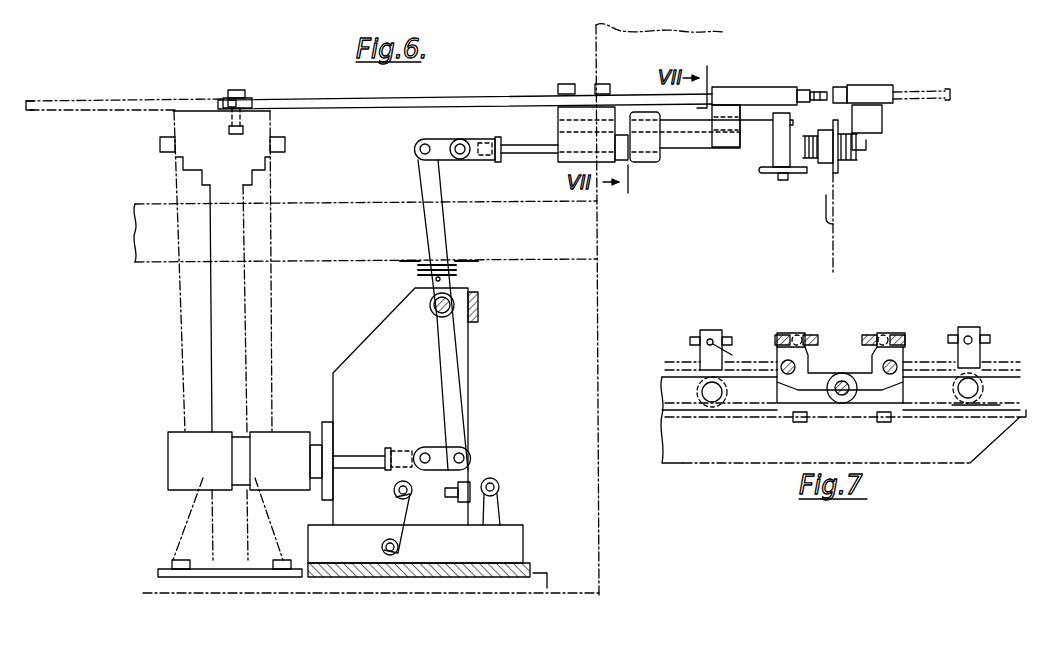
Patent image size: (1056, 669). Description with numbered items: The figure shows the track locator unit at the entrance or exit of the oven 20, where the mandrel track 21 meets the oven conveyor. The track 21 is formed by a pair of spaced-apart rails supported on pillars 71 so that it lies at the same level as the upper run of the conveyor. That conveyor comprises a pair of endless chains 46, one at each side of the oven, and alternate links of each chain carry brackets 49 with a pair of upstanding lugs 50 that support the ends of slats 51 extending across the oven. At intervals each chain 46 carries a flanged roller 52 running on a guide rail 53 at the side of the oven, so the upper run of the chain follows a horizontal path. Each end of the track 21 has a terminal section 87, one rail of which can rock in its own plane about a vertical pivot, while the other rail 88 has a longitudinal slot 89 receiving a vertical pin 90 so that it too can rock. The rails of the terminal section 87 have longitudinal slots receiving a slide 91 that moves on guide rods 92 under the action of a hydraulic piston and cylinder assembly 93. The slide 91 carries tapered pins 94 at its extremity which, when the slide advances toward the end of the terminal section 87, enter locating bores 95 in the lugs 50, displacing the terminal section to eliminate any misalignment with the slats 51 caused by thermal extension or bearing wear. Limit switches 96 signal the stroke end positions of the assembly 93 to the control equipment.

In FIG. 6, the oven 20 is at (597, 304).
In FIG. 6, the track 21 is at (128, 98).
In FIG. 6, the endless chains 46 is at (840, 160).
In FIG. 7, the endless chains 46 is at (987, 381).
In FIG. 6, the brackets 49 is at (863, 136).
In FIG. 7, the brackets 49 is at (741, 369).
In FIG. 6, the upstanding lugs 50 is at (893, 88).
In FIG. 7, the upstanding lugs 50 is at (711, 377).
In FIG. 6, the slats 51 is at (910, 92).
In FIG. 7, the slats 51 is at (720, 329).
In FIG. 6, the flanged roller 52 is at (843, 95).
In FIG. 7, the flanged roller 52 is at (982, 381).
In FIG. 6, the guide rail 53 is at (822, 129).
In FIG. 7, the guide rail 53 is at (940, 415).
In FIG. 6, the pillars 71 is at (209, 345).
In FIG. 6, the terminal section 87 is at (300, 97).
In FIG. 6, the rail 88 is at (437, 93).
In FIG. 7, the rail 88 is at (887, 333).
In FIG. 6, the longitudinal slot 89 is at (251, 99).
In FIG. 6, the vertical pin 90 is at (237, 92).
In FIG. 6, the slide 91 is at (760, 88).
In FIG. 7, the slide 91 is at (896, 366).
In FIG. 6, the guide rods 92 is at (748, 120).
In FIG. 7, the guide rods 92 is at (891, 373).
In FIG. 6, the hydraulic piston and cylinder assembly 93 is at (279, 452).
In FIG. 6, the tapered pins 94 is at (808, 99).
In FIG. 7, the tapered pins 94 is at (798, 336).
In FIG. 6, the locating bores 95 is at (867, 115).
In FIG. 7, the locating bores 95 is at (969, 336).
In FIG. 6, the limit switches 96 is at (337, 554).